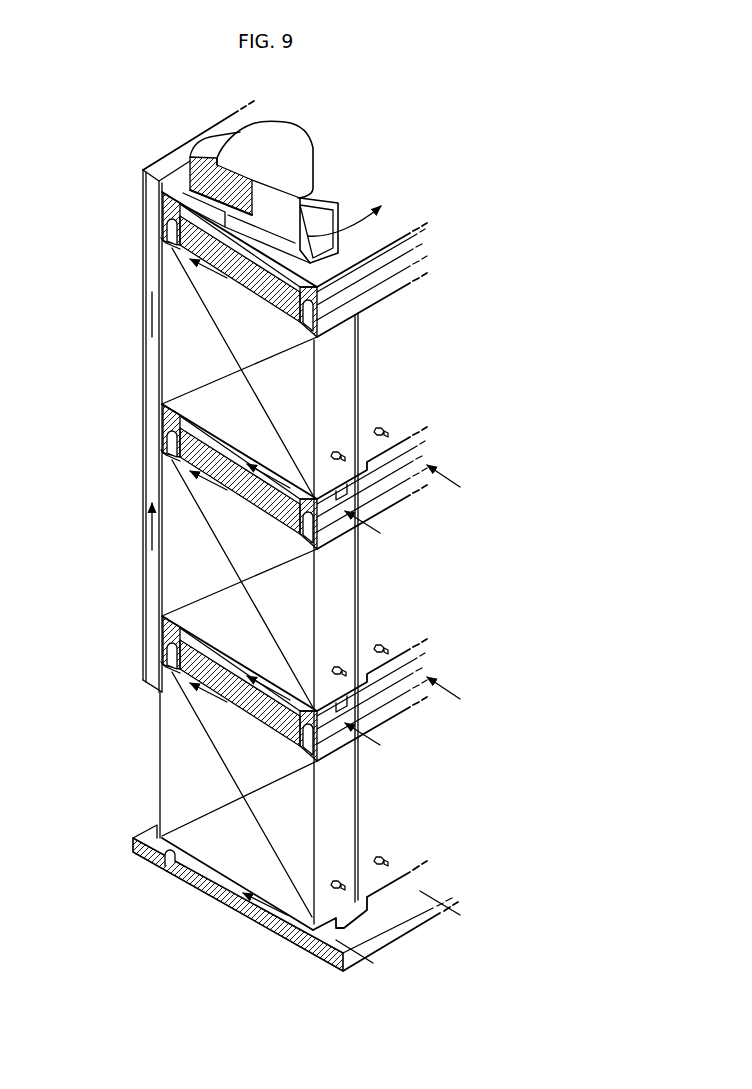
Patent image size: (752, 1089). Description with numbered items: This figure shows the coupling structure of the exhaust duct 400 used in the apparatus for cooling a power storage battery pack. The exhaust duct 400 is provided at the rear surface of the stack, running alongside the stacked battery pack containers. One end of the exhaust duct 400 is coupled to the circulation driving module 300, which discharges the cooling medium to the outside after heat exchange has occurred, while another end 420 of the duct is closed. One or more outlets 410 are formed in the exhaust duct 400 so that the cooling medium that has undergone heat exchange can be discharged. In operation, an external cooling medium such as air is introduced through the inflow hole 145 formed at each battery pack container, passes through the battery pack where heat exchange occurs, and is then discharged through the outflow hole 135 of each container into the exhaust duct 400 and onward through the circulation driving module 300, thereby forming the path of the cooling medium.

The circulation driving module 300 is at (291, 143).
The exhaust duct 400 is at (139, 373).
The outlet 410 is at (157, 239).
The another end of the duct 420 is at (155, 691).
The outflow hole 135 is at (172, 253).
The inflow hole 145 is at (333, 508).